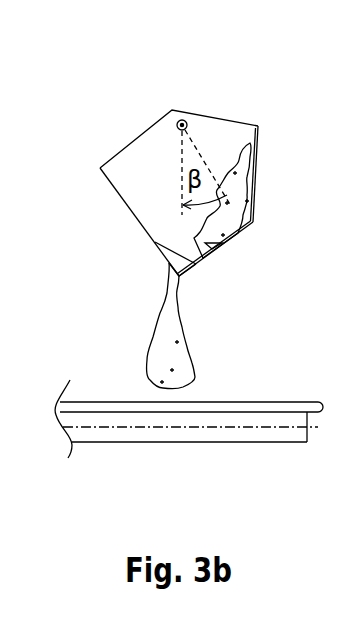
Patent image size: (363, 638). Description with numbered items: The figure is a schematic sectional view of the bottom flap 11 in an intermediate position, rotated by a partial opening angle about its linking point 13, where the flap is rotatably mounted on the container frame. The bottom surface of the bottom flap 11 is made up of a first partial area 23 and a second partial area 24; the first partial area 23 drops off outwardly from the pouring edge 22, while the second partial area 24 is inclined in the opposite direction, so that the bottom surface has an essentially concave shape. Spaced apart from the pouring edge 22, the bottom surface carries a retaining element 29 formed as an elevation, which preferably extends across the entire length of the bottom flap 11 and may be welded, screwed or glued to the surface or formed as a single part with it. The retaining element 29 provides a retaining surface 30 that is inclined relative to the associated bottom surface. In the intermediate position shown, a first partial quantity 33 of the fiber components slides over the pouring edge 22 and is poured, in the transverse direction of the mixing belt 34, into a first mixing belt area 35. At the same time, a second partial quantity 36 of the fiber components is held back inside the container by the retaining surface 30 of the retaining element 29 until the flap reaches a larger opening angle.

The bottom flap 11 is at (152, 127).
The linking point 13 is at (186, 122).
The pouring edge 22 is at (179, 278).
The first partial area 23 is at (155, 242).
The second partial area 24 is at (253, 217).
The retaining element 29 is at (210, 252).
The retaining surface 30 is at (228, 240).
The first partial quantity 33 is at (165, 350).
The mixing belt 34 is at (233, 405).
The first mixing belt area 35 is at (173, 402).
The second partial quantity 36 is at (240, 192).